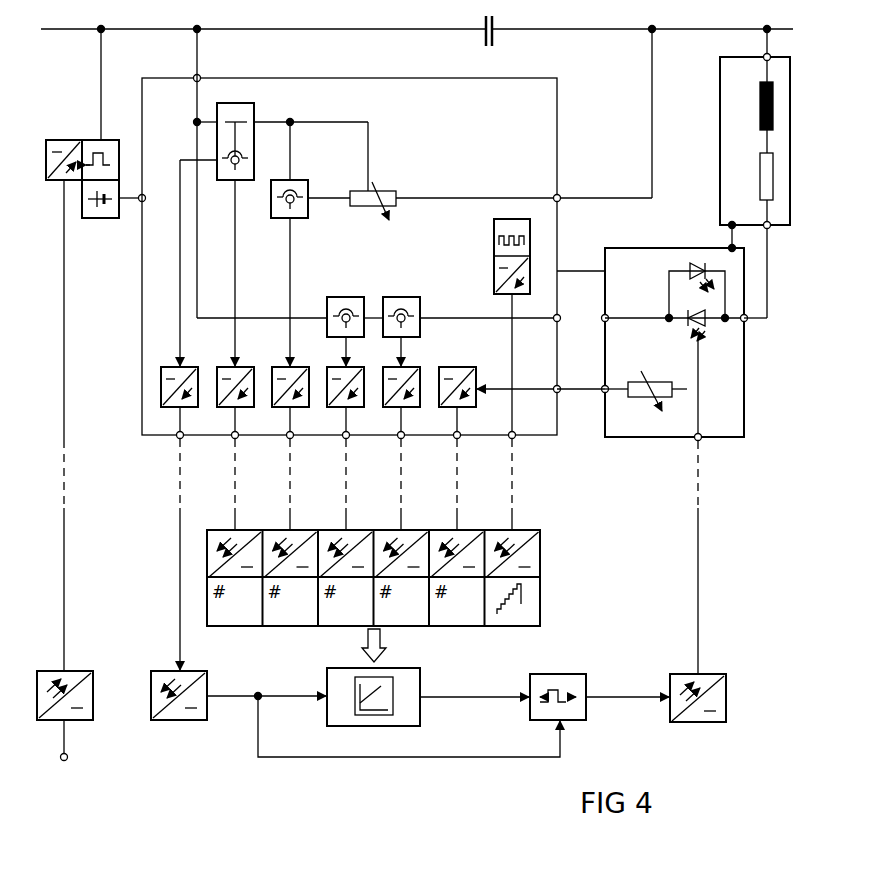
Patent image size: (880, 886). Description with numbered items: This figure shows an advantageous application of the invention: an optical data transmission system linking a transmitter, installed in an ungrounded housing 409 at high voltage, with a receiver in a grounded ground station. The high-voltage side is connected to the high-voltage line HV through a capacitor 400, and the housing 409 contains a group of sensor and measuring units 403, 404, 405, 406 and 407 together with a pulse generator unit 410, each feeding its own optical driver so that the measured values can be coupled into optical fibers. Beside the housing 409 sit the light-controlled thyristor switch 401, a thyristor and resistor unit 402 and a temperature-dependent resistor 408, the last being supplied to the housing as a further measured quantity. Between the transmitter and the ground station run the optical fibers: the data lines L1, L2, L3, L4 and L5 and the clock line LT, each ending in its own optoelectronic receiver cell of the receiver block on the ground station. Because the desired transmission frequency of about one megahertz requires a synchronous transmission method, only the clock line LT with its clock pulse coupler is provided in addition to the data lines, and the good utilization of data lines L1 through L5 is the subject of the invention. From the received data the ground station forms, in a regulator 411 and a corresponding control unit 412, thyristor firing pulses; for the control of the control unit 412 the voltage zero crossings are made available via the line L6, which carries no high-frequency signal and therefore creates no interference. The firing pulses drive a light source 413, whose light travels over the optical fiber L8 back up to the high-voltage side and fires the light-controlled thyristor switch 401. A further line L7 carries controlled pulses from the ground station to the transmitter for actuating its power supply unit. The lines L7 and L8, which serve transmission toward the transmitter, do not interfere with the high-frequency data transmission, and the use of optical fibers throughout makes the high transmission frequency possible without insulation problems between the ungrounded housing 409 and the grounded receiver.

The capacitor 400 is at (492, 46).
The light-controlled thyristor switch 401 is at (660, 248).
The thyristor/resistor unit 402 is at (720, 117).
The adjustable resistor 403 is at (380, 190).
The sensor unit 404 is at (254, 110).
The sensor 405 is at (343, 297).
The sensor 406 is at (399, 297).
The sensor 407 is at (300, 218).
The temperature-dependent resistor 408 is at (646, 382).
The ungrounded housing 409 is at (558, 130).
The pulse generator unit 410 is at (96, 139).
The regulator 411 is at (420, 672).
The control unit 412 is at (552, 674).
The light source 413 is at (692, 723).
The high voltage line HV is at (598, 31).
The data line L1 is at (235, 512).
The optical link 2 L2 is at (290, 512).
The optical link 3 L3 is at (346, 512).
The optical link 4 L4 is at (401, 512).
The data line L5 is at (457, 512).
The line L6 is at (180, 598).
The line L7 is at (64, 583).
The optical fiber L8 is at (698, 565).
The clock line LT is at (512, 512).